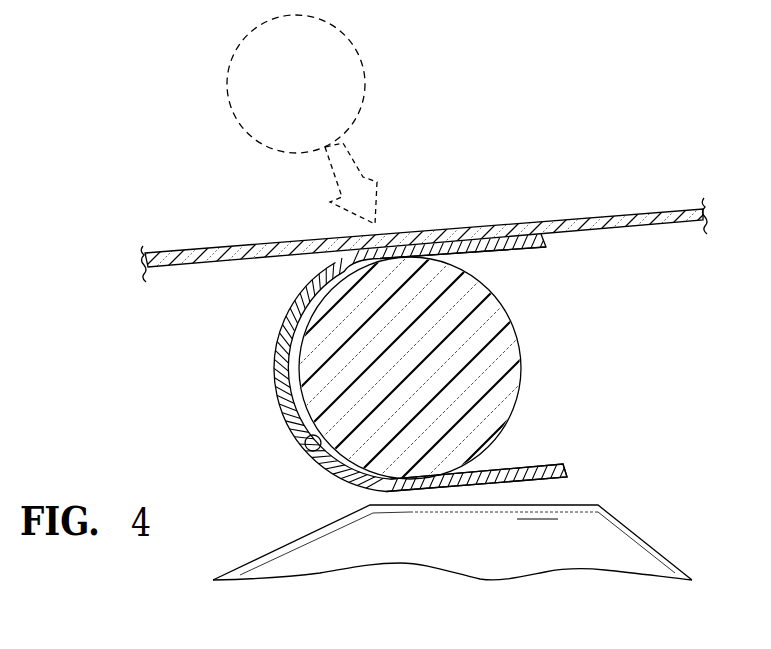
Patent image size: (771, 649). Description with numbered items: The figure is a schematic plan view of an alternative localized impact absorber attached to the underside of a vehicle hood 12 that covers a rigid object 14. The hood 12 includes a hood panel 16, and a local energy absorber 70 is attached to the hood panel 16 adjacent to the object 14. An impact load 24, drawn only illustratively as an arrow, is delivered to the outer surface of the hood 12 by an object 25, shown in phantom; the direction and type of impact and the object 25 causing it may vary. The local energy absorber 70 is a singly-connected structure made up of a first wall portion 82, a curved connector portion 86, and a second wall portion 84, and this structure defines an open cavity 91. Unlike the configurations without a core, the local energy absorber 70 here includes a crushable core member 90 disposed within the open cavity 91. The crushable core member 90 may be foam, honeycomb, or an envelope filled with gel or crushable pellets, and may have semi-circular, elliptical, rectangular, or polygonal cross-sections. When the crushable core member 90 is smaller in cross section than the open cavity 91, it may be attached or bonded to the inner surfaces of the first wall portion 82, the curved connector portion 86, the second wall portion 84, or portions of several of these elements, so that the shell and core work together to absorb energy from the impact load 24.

The vehicle hood 12 is at (189, 214).
The object 14 is at (496, 552).
The hood panel 16 is at (573, 212).
The impact load 24 is at (366, 170).
The object 25 is at (365, 62).
The local energy absorber 70 is at (416, 365).
The first wall portion 82 is at (487, 250).
The second wall portion 84 is at (513, 463).
The curved connector portion 86 is at (278, 404).
The crushable core member 90 is at (424, 381).
The open cavity 91 is at (318, 460).